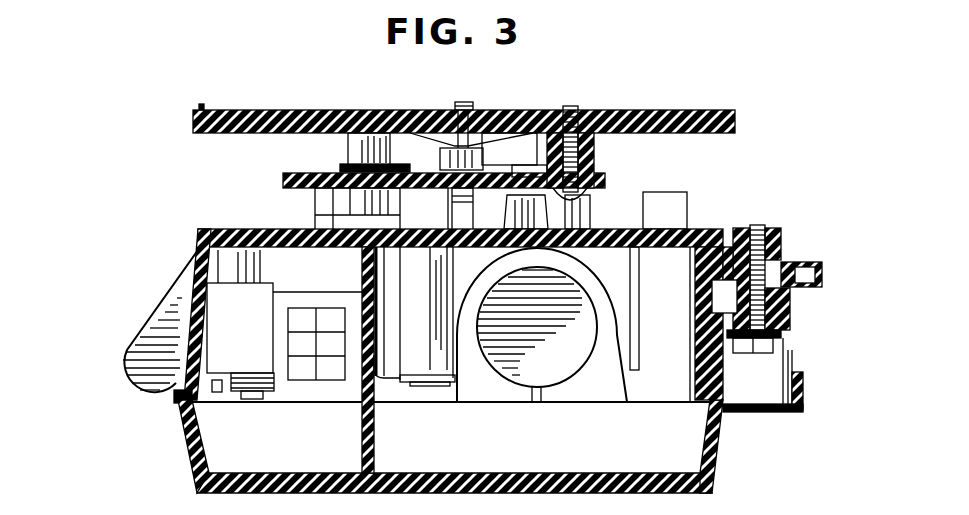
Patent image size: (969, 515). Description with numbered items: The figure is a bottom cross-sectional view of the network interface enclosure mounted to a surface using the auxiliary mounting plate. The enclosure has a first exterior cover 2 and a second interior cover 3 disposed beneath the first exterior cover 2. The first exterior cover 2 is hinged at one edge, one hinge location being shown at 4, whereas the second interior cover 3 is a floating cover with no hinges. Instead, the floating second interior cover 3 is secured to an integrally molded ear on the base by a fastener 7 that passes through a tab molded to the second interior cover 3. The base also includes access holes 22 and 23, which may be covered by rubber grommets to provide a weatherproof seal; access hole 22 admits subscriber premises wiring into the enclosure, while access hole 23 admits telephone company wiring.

The first exterior cover 2 is at (187, 438).
The second interior cover 3 is at (362, 428).
The hinge 4 is at (145, 362).
The fastener 7 is at (757, 352).
The access hole 22 is at (303, 317).
The access hole 23 is at (553, 325).